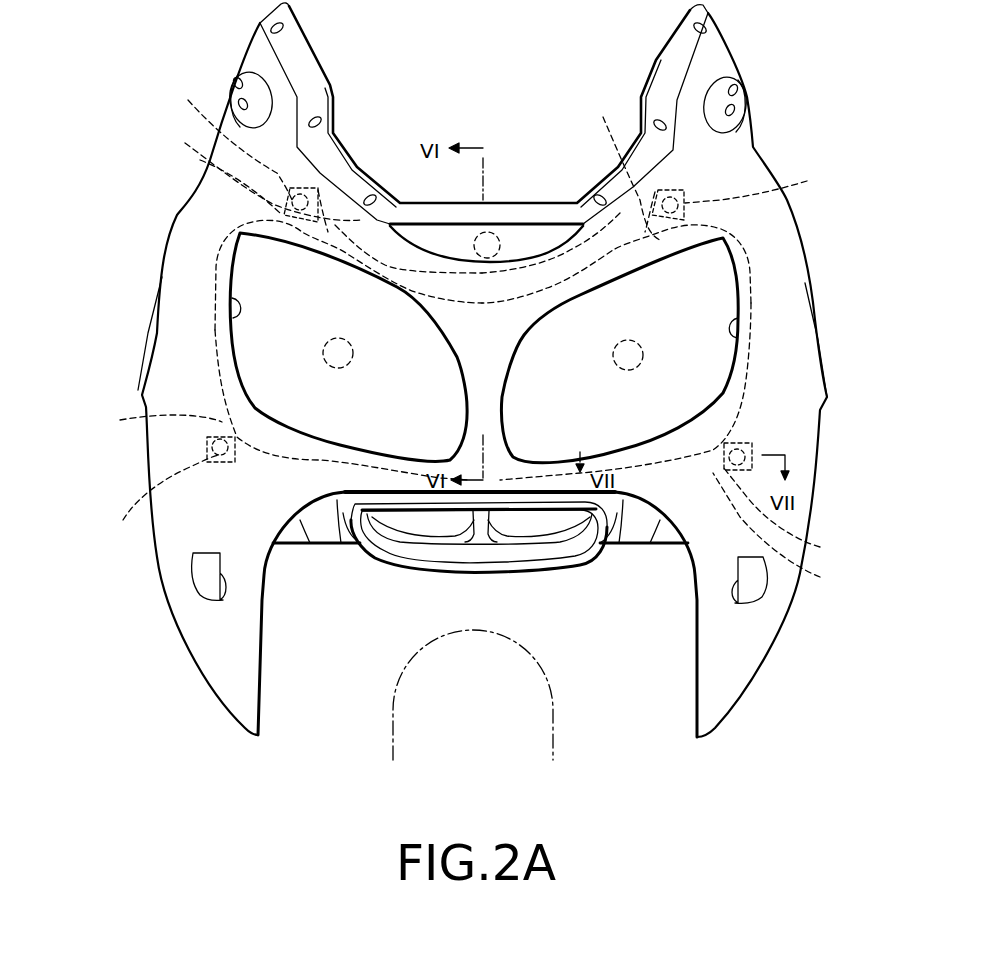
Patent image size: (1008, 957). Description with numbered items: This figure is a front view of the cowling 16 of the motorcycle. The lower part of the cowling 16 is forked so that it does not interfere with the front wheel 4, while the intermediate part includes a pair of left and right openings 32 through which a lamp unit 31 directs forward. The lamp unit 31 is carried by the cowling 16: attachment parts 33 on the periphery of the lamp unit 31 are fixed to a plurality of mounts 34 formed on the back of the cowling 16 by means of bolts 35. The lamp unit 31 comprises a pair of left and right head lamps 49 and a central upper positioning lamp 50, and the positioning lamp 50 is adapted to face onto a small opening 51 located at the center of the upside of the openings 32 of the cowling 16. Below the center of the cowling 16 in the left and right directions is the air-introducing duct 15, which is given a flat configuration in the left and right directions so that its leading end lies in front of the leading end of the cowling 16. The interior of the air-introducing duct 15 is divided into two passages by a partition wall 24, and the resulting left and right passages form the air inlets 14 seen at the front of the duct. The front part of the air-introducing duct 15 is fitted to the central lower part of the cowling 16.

The front wheel 4 is at (555, 735).
The air intake opening 14 is at (420, 533).
The air-introducing duct 15 is at (572, 566).
The cowling 16 is at (182, 208).
The partition wall 24 is at (479, 537).
The lamp unit 31 is at (218, 243).
The openings 32 is at (234, 311).
The attachment parts 33 is at (477, 349).
The mounts 34 is at (312, 198).
The bolts 35 is at (481, 317).
The head lamps 49 is at (323, 355).
The positioning lamp 50 is at (490, 231).
The small opening 51 is at (552, 252).